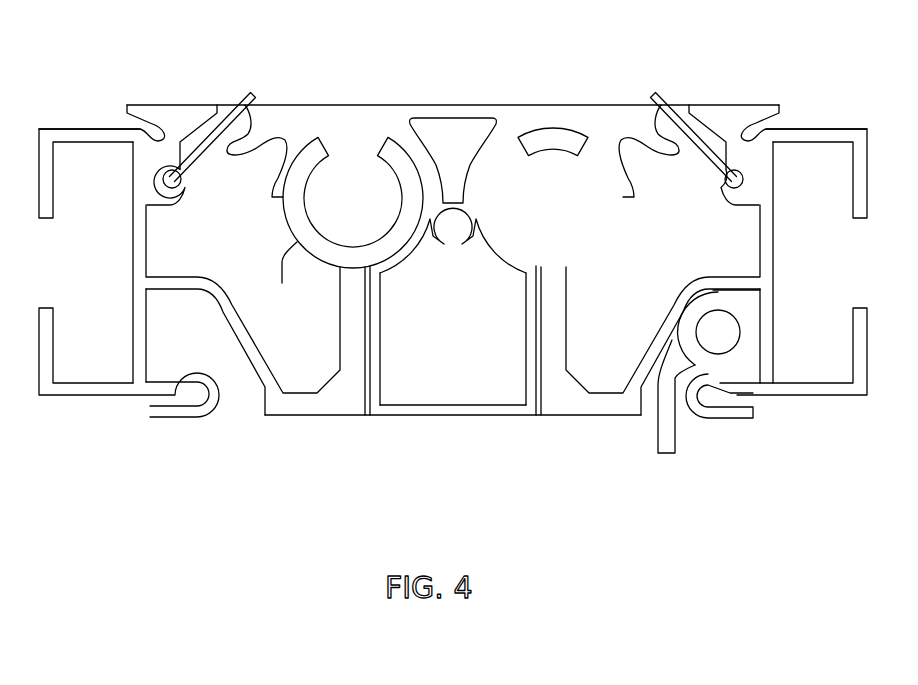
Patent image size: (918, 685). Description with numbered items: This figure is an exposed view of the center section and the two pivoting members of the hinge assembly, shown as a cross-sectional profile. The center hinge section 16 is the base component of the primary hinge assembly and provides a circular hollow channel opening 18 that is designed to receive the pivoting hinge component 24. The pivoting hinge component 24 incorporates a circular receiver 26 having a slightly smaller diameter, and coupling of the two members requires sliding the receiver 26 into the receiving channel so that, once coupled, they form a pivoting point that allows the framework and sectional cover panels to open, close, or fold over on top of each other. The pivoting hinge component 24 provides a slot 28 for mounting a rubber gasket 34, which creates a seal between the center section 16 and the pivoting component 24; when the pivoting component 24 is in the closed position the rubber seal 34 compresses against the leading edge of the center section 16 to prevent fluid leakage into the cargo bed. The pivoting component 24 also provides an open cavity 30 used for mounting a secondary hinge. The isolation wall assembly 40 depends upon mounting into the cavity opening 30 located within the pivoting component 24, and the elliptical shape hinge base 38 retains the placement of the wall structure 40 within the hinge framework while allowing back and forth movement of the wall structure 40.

The center hinge section 16 is at (372, 173).
The circular hollow channel opening 18 is at (548, 185).
The pivoting hinge component 24 is at (78, 128).
The circular receiver 26 is at (282, 283).
The slot 28 is at (723, 205).
The open cavity 30 is at (753, 367).
The rubber gasket 34 is at (252, 94).
The elliptical shape hinge base 38 is at (740, 310).
The isolation wall assembly 40 is at (666, 455).